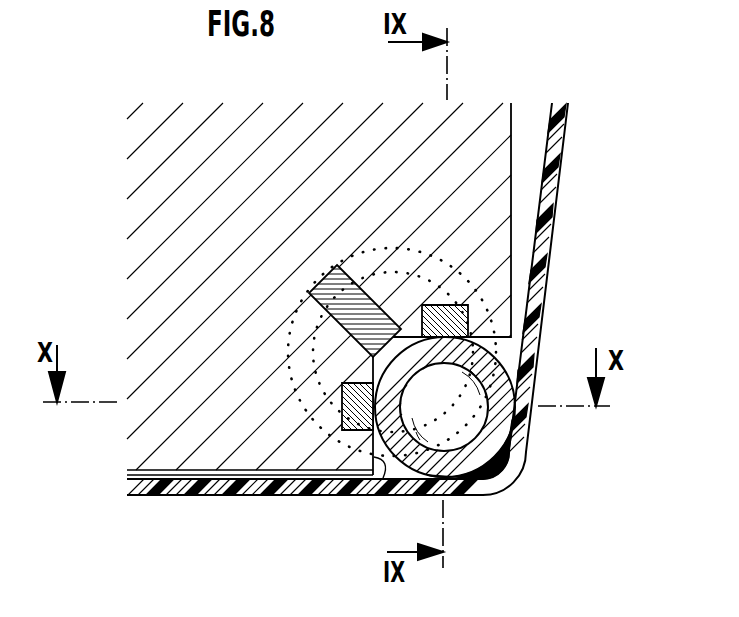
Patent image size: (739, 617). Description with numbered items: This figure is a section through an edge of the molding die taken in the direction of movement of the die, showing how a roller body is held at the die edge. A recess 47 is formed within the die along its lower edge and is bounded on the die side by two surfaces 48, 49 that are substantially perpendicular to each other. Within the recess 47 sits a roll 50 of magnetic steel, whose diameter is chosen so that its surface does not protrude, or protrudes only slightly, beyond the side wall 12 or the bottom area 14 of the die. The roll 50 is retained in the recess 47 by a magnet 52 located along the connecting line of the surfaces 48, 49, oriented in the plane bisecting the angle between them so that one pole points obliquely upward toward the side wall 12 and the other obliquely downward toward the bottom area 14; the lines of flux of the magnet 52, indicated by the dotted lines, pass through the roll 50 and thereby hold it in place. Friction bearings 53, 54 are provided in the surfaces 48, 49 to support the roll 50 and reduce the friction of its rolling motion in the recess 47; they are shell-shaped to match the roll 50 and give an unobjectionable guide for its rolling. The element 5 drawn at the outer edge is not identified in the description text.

The body panel 5 is at (567, 113).
The side wall 12 is at (512, 172).
The bottom area 14 is at (190, 497).
The recess 47 is at (503, 348).
The surface 48 is at (482, 322).
The surface 49 is at (378, 482).
The roll 50 is at (484, 482).
The magnet 52 is at (352, 273).
The friction bearing 53 is at (468, 304).
The friction bearing 54 is at (338, 425).